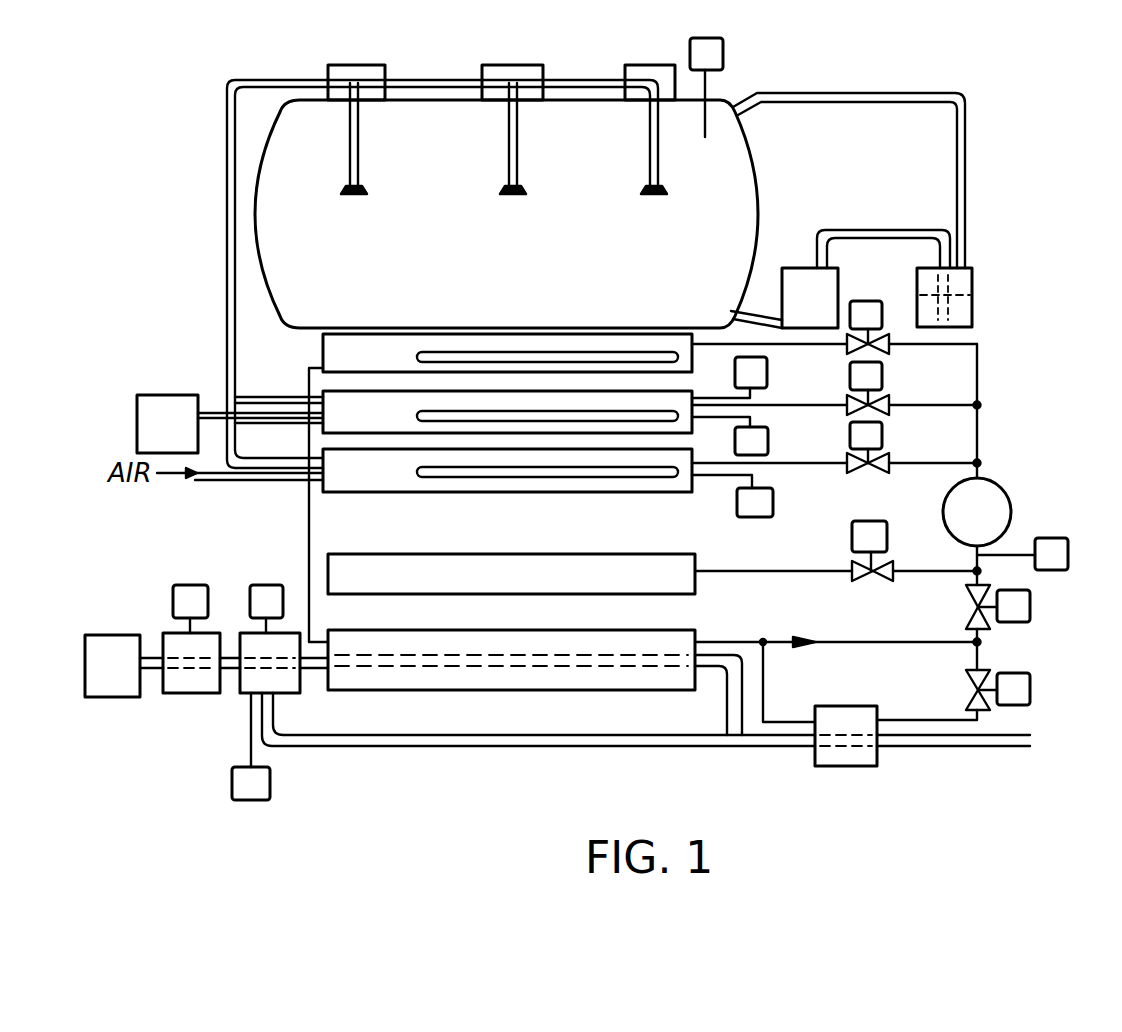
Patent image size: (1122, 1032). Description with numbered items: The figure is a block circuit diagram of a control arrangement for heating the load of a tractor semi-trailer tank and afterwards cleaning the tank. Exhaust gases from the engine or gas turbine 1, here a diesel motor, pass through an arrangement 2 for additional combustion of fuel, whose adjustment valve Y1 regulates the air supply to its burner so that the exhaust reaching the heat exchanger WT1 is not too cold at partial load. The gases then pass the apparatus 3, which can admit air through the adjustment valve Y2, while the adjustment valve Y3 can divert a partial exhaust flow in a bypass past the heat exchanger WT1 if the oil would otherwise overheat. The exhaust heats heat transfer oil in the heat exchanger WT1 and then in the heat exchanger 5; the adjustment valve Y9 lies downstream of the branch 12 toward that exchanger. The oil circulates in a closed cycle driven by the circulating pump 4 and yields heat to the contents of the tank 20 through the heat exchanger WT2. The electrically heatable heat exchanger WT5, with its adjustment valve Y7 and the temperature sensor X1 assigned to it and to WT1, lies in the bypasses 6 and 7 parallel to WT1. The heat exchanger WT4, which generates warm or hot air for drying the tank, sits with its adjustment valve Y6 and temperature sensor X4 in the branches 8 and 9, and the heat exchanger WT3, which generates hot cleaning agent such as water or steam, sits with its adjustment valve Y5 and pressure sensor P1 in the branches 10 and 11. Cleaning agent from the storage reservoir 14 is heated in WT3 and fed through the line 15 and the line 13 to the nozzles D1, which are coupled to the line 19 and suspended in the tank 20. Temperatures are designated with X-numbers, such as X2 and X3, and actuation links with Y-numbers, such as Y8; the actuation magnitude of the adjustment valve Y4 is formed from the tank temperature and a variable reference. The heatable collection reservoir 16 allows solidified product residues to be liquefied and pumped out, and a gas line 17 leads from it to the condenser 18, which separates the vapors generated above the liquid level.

The engine or gas turbine 1 is at (118, 684).
The arrangement for additional combustion of fuel 2 is at (176, 696).
The apparatus for supplying air to the exhaust gas stream 3 is at (240, 697).
The circulating pump 4 is at (986, 528).
The heat exchanger 5 is at (878, 765).
The bypass 6 is at (310, 590).
The bypass 7 is at (980, 571).
The branch 8 is at (312, 486).
The branch 9 is at (978, 463).
The branch 10 is at (315, 425).
The branch 11 is at (978, 405).
The branch 12 is at (980, 641).
The line 13 is at (225, 318).
The storage reservoir 14 is at (180, 438).
The line 15 is at (284, 379).
The collection reservoir 16 is at (824, 310).
The gas line 17 is at (905, 211).
The condenser 18 is at (973, 278).
The line 19 is at (361, 153).
The tank 20 is at (505, 267).
The nozzles D1 is at (366, 190).
The pressure sensor P1 is at (730, 436).
The temperature sensor X1 is at (1022, 554).
The temperature sensor X2 is at (706, 87).
The temperature sensor X3 is at (729, 377).
The temperature sensor X4 is at (732, 496).
The adjustment valve Y1 is at (190, 609).
The adjustment valve Y2 is at (266, 609).
The adjustment valve Y3 is at (251, 746).
The adjustment valve Y4 is at (834, 327).
The adjustment valve Y5 is at (834, 388).
The adjustment valve Y6 is at (834, 447).
The adjustment valve Y7 is at (836, 551).
The adjustment valve Y8 is at (998, 607).
The adjustment valve Y9 is at (998, 690).
The heat exchanger WT1 is at (351, 691).
The heat exchanger WT2 is at (396, 365).
The heat exchanger WT3 is at (396, 423).
The heat exchanger WT4 is at (409, 481).
The heat exchanger WT5 is at (409, 587).